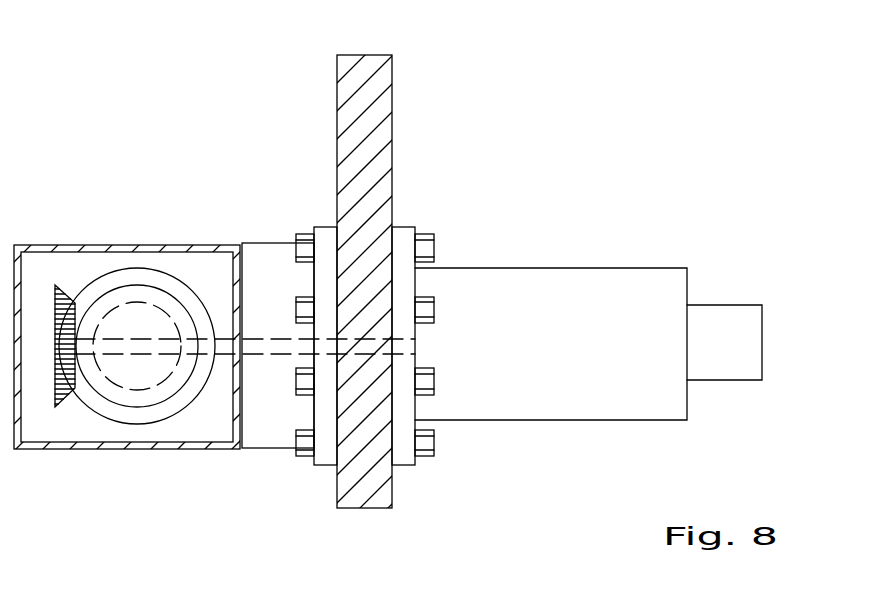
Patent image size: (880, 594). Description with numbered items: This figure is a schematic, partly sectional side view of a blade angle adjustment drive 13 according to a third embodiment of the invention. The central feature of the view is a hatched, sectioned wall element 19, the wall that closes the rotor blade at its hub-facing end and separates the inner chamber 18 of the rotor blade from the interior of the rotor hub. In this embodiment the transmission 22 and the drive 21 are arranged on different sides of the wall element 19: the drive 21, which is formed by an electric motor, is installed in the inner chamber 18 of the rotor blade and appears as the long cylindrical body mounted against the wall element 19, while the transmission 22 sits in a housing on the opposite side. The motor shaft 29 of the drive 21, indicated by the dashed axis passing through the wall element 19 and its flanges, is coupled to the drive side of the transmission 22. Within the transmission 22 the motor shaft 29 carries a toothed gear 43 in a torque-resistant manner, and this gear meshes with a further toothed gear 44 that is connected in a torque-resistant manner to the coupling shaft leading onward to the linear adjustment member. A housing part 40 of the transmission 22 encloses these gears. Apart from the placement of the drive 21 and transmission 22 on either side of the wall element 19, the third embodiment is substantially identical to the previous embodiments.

The blade angle adjustment drive 13 is at (142, 110).
The inner chamber 18 is at (597, 129).
The wall element 19 is at (392, 73).
The drive 21 is at (583, 275).
The transmission 22 is at (118, 242).
The motor shaft 29 is at (272, 336).
The housing 40 is at (192, 243).
The toothed gear 43 is at (323, 228).
The toothed gear 44 is at (167, 410).